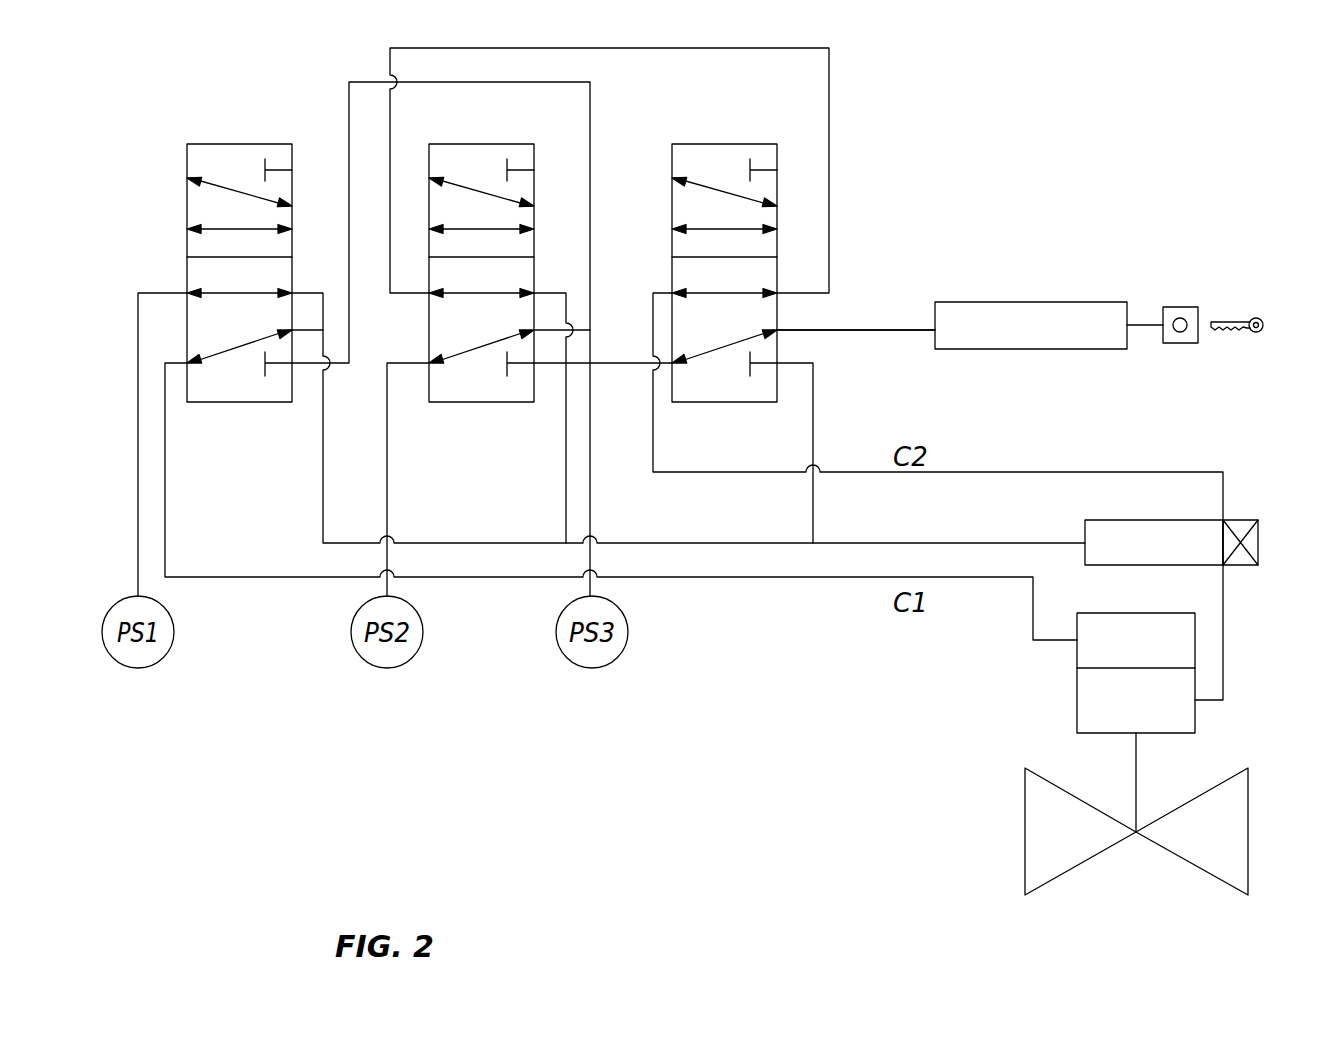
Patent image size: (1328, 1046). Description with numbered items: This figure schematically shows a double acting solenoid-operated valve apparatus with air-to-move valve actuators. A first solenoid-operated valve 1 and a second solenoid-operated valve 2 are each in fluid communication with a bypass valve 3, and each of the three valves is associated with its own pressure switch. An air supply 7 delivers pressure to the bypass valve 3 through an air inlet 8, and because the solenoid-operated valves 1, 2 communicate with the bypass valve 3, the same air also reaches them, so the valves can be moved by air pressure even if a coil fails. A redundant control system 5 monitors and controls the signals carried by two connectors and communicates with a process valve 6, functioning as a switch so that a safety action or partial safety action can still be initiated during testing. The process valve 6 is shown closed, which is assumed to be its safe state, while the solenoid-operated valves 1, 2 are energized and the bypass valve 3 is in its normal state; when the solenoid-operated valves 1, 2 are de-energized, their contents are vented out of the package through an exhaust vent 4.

The first solenoid-operated valve 1 is at (210, 144).
The second solenoid-operated valve 2 is at (450, 144).
The bypass valve 3 is at (700, 144).
The exhaust vent 4 is at (1245, 520).
The redundant control system 5 is at (1145, 657).
The process valve 6 is at (1080, 797).
The air supply 7 is at (1100, 302).
The air inlet 8 is at (780, 333).